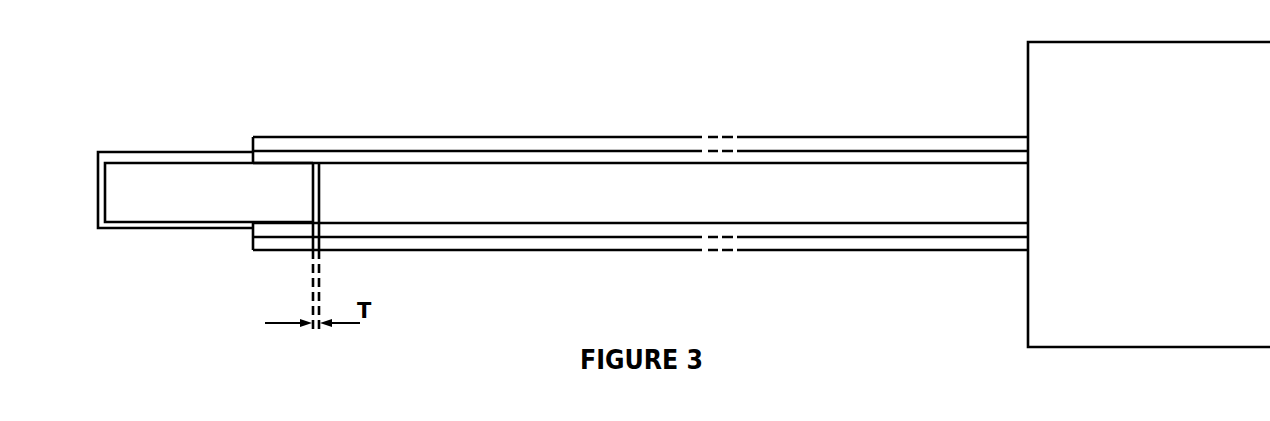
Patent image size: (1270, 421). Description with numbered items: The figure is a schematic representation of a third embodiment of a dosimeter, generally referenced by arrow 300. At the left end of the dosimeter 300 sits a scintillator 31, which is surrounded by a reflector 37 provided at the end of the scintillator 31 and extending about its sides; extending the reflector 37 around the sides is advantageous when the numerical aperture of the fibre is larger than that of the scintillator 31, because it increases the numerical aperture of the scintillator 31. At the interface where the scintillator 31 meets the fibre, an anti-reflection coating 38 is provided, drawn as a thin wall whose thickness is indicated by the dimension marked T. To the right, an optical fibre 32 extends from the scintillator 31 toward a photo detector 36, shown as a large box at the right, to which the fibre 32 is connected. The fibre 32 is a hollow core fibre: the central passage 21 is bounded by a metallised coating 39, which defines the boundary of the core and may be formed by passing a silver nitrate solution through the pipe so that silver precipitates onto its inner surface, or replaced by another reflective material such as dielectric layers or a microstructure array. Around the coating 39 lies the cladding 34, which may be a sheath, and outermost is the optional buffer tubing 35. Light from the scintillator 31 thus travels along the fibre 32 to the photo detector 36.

The dosimeter 300 is at (452, 78).
The reflector 37 is at (103, 153).
The scintillator 31 is at (204, 206).
The anti-reflection coating 38 is at (320, 184).
The channel / optical fiber 21 is at (462, 203).
The cladding 34 is at (530, 164).
The optical fibre 32 is at (608, 151).
The metallised coating 39 is at (485, 224).
The buffer tubing 35 is at (638, 238).
The photo detector 36 is at (1190, 207).